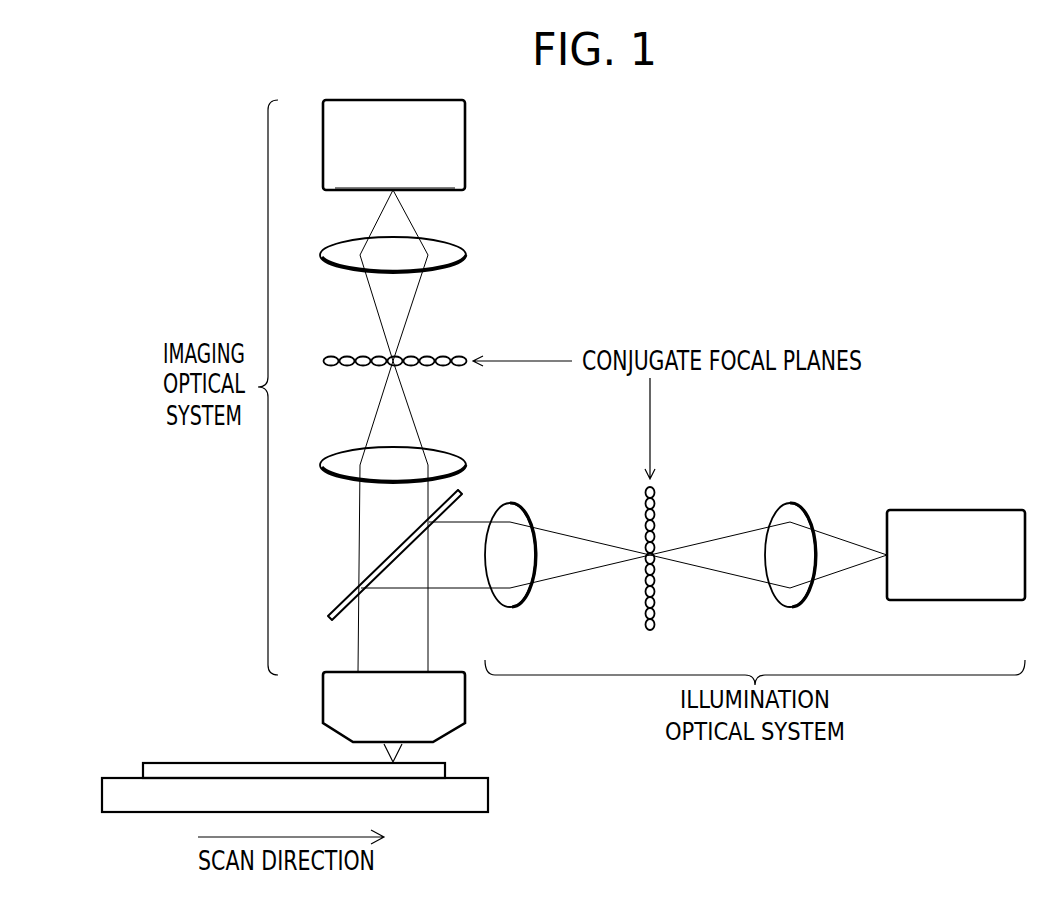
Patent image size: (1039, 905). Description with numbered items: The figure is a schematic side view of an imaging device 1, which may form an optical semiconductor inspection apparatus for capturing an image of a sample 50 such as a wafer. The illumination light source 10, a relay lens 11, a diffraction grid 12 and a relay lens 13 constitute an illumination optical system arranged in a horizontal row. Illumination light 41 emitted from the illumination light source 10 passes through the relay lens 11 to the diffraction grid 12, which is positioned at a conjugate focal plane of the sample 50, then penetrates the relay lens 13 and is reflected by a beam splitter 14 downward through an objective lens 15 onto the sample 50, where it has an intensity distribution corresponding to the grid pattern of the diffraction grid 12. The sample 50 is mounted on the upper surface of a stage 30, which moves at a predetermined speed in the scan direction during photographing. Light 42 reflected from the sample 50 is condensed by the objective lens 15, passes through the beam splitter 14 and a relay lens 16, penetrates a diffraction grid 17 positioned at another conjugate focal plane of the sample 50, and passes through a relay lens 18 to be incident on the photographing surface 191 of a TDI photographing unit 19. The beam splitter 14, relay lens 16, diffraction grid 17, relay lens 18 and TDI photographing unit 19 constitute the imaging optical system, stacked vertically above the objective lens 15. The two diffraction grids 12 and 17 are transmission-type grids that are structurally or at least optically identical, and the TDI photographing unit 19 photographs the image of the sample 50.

The imaging device 1 is at (909, 750).
The illumination light source 10 is at (992, 510).
The relay lens 11 is at (802, 508).
The diffraction grid 12 is at (654, 488).
The relay lens 13 is at (520, 509).
The beam splitter 14 is at (463, 492).
The objective lens 15 is at (466, 712).
The relay lens 16 is at (466, 465).
The diffraction grid 17 is at (466, 361).
The relay lens 18 is at (466, 255).
The TDI photographing unit 19 is at (465, 116).
The photographing surface 191 is at (442, 184).
The stage 30 is at (490, 792).
The illumination light 41 is at (843, 524).
The reflected light 42 is at (363, 416).
The sample 50 is at (446, 767).